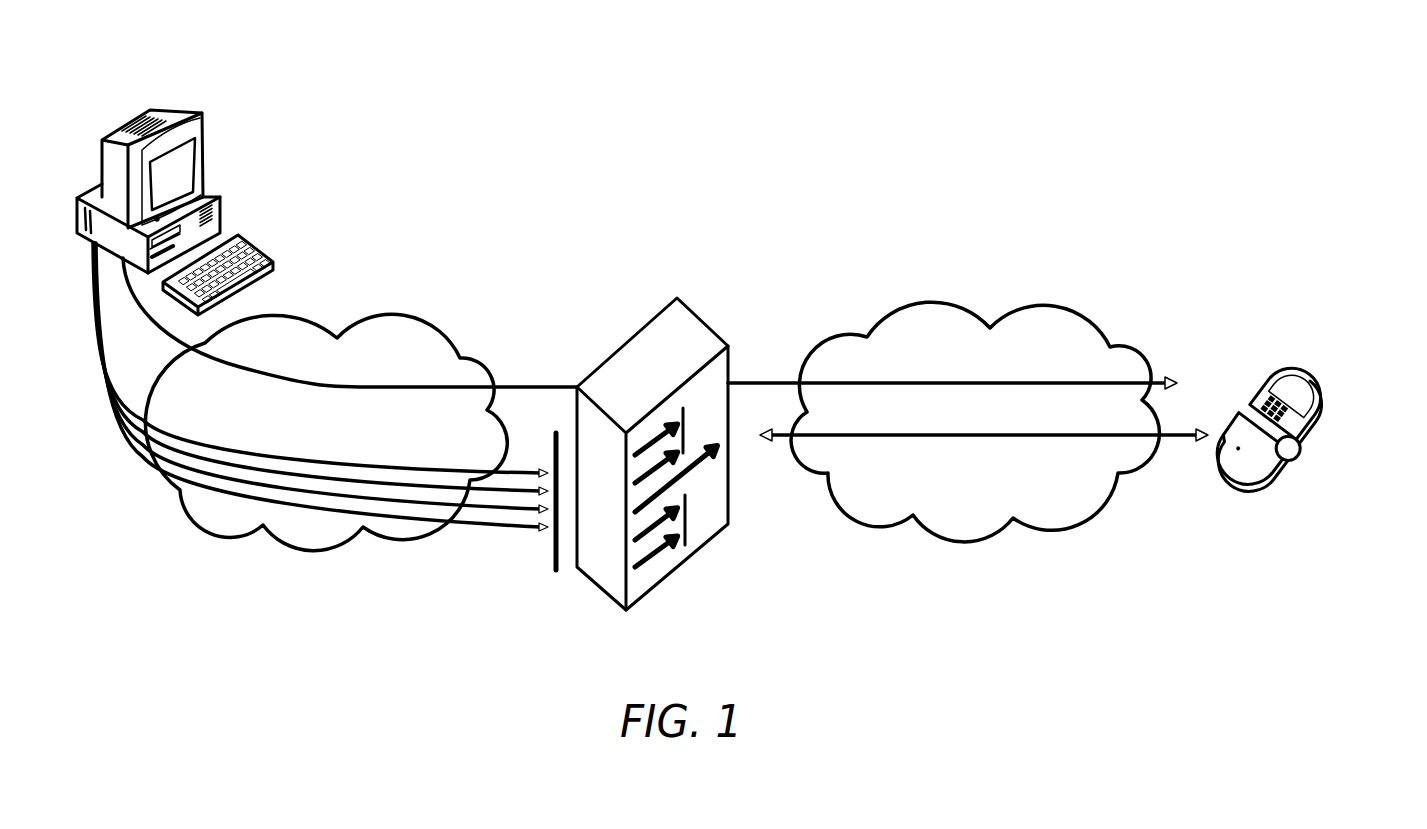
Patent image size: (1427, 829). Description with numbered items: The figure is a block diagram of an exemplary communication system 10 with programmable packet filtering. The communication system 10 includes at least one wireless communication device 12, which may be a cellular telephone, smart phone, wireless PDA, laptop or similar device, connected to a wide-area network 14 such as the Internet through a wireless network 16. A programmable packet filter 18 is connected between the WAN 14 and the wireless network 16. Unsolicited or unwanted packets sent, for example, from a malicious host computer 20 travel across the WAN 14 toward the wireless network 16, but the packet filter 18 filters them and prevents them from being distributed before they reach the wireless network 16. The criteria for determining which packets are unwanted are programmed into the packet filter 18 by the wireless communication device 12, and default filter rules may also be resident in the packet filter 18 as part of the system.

The communication system 10 is at (1078, 46).
The wireless communication device 12 is at (1328, 395).
The wide-area network 14 is at (397, 312).
The wireless network 16 is at (1032, 305).
The programmable packet filter 18 is at (732, 368).
The malicious host computer 20 is at (197, 168).